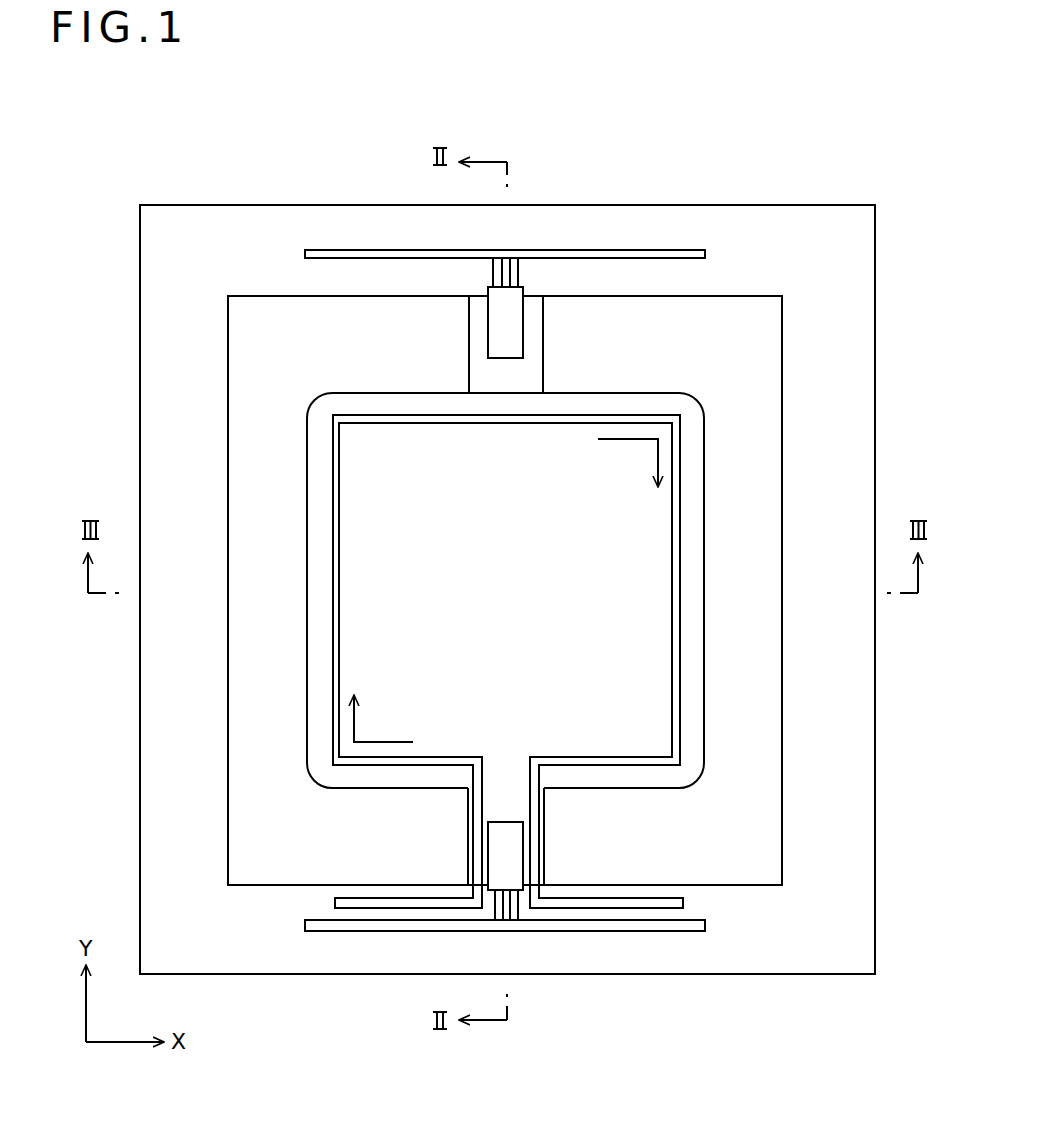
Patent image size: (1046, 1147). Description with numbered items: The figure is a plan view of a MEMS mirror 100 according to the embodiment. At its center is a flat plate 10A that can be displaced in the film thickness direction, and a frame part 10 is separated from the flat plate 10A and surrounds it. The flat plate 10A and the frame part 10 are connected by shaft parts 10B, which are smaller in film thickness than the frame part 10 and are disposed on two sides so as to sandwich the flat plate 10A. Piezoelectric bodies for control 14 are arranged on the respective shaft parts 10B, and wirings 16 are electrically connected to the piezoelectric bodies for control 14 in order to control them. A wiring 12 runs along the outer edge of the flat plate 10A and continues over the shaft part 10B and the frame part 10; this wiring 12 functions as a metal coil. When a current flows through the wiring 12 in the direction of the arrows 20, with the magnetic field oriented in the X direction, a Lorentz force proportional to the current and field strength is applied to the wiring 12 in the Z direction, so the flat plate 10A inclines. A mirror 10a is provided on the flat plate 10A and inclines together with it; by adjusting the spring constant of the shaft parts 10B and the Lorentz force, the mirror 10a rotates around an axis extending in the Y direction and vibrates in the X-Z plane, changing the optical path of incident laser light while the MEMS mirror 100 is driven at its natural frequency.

The MEMS mirror 100 is at (114, 194).
The frame part 10 is at (851, 320).
The flat plate 10A is at (705, 432).
The shaft parts 10B is at (544, 344).
The mirror 10a is at (608, 632).
The wiring 12 is at (681, 717).
The piezoelectric bodies for control 14 is at (495, 330).
The wirings 16 is at (617, 250).
The arrows 20 is at (657, 463).